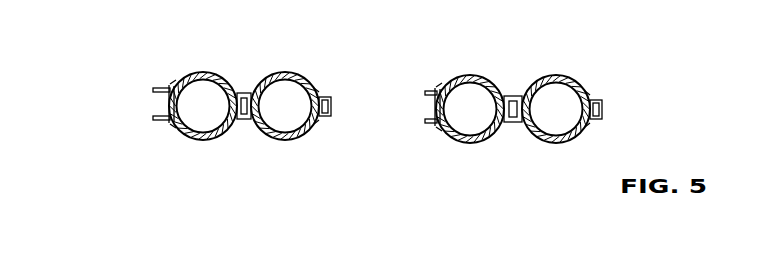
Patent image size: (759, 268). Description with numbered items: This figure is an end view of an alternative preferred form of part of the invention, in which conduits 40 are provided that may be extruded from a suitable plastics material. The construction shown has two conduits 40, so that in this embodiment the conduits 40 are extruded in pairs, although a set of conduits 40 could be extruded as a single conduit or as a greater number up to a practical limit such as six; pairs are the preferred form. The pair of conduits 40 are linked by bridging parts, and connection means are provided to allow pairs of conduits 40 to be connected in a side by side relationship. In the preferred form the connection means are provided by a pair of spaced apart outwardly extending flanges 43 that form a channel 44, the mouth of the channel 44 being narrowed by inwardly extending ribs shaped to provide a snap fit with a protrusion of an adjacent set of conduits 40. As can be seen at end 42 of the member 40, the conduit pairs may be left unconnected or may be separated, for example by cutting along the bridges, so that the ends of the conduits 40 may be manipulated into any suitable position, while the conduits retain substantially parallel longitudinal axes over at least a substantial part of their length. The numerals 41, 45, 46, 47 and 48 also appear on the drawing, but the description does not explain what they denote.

The conduits 40 is at (369, 104).
The tubular ring member 41 is at (262, 76).
The end 42 is at (238, 126).
The outwardly extending flanges 43 is at (160, 85).
The channel 44 is at (162, 105).
The mounting flange 45 is at (158, 96).
The end connector 46 is at (333, 99).
The end connector insert 47 is at (333, 107).
The ring junction 48 is at (314, 91).